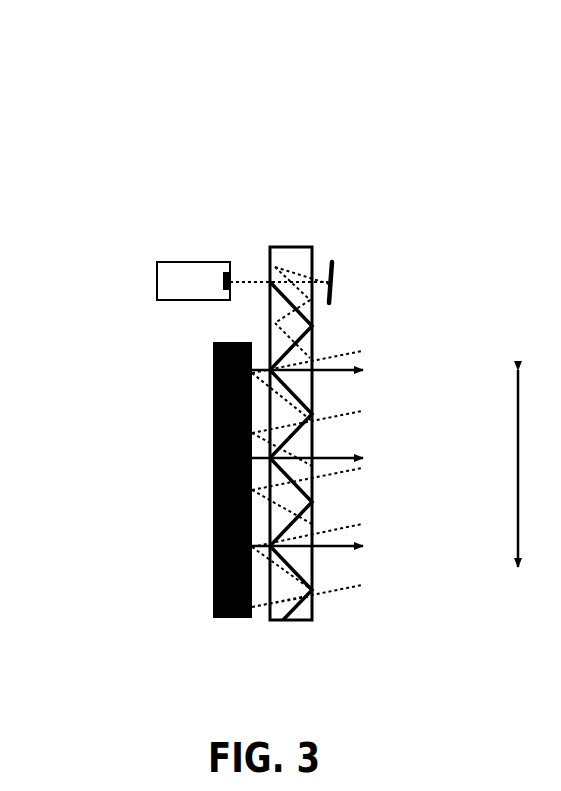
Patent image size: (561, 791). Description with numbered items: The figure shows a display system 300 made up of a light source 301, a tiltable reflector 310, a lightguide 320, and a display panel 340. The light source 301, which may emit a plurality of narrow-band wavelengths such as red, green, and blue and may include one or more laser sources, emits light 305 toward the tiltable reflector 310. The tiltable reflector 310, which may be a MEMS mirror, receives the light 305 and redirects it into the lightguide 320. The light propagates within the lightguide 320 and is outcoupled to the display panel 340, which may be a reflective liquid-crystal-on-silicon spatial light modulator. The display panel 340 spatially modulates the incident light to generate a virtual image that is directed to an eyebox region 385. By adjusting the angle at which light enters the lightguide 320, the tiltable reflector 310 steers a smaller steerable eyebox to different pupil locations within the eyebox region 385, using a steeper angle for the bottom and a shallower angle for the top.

The display system 300 is at (460, 30).
The light source 301 is at (157, 262).
The light 305 is at (252, 281).
The tiltable reflector 310 is at (331, 300).
The lightguide 320 is at (312, 246).
The display panel 340 is at (217, 618).
The eyebox region 385 is at (517, 567).